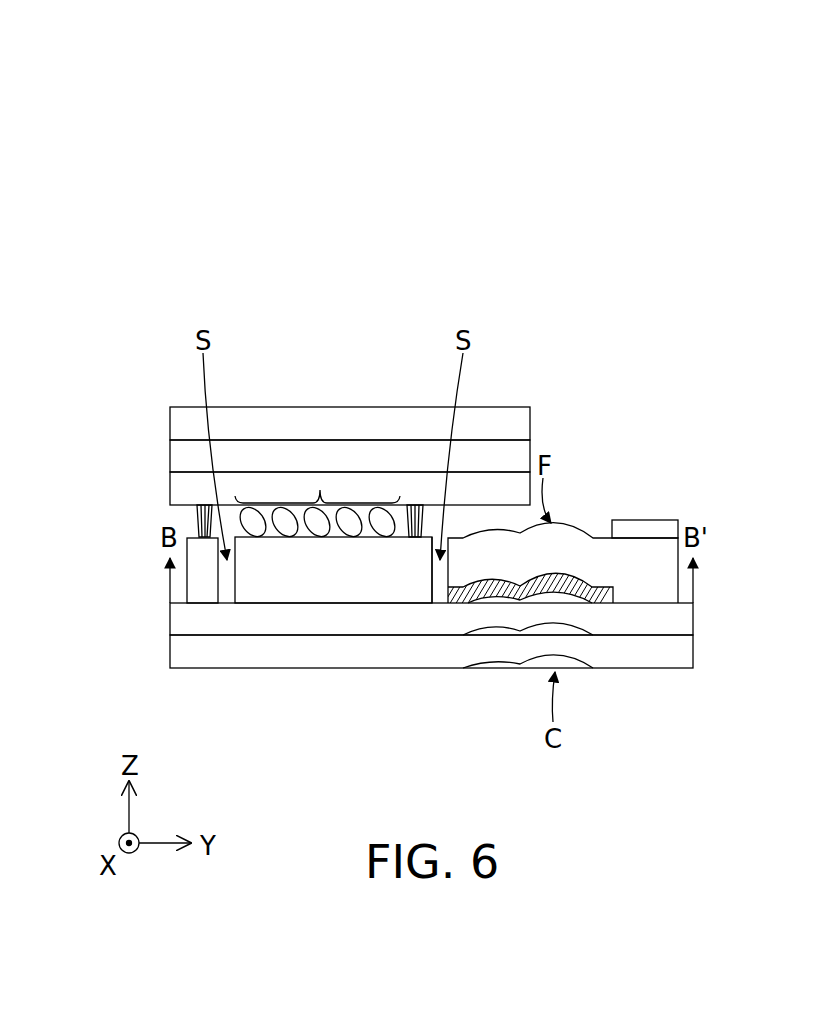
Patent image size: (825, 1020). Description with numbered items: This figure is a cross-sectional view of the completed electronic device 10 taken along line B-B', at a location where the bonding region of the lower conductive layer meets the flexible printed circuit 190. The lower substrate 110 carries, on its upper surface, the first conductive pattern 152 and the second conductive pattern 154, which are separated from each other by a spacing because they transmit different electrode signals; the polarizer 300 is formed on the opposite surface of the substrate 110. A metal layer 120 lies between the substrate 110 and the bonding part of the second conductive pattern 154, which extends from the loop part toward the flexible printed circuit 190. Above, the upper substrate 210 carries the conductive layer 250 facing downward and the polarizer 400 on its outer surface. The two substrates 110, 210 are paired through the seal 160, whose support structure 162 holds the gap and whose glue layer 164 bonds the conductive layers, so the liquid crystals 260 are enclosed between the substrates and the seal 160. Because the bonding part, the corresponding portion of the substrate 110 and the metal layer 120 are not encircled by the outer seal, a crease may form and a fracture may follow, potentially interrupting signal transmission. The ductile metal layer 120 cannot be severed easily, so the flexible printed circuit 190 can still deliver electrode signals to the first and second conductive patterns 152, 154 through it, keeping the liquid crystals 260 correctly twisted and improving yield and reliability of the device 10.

The electronic device 10 is at (172, 126).
The seal 160 is at (693, 68).
The support structure 162 is at (413, 540).
The glue layer 164 is at (197, 517).
The polarizer 400 is at (170, 424).
The substrate 210 is at (170, 457).
The conductive layer 250 is at (170, 489).
The liquid crystals 260 is at (320, 491).
The first conductive pattern 152 is at (327, 583).
The second conductive pattern 154 is at (203, 590).
The flexible printed circuit 190 is at (646, 530).
The metal layer 120 is at (455, 597).
The substrate 110 is at (685, 623).
The polarizer 300 is at (685, 656).